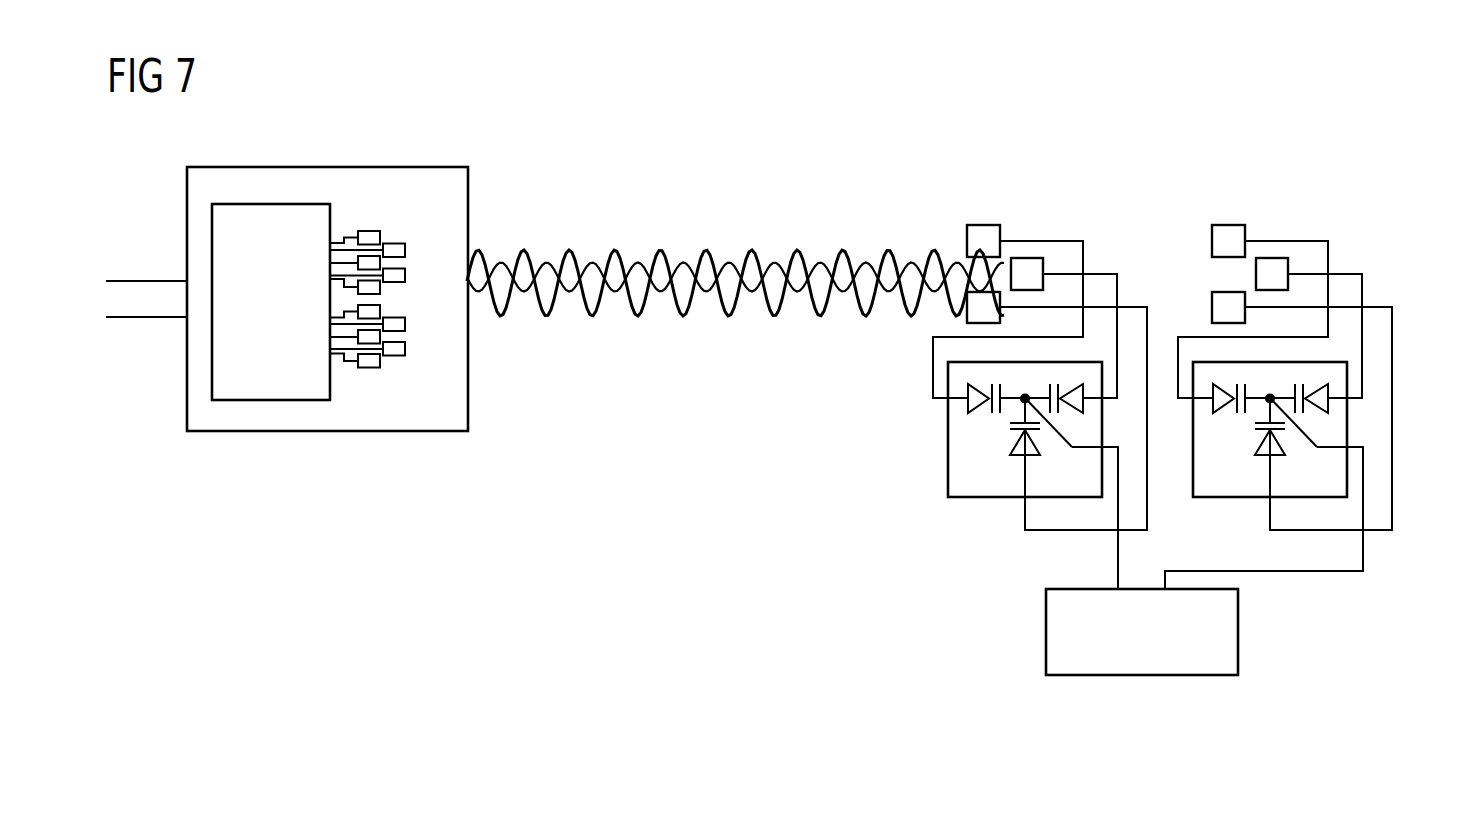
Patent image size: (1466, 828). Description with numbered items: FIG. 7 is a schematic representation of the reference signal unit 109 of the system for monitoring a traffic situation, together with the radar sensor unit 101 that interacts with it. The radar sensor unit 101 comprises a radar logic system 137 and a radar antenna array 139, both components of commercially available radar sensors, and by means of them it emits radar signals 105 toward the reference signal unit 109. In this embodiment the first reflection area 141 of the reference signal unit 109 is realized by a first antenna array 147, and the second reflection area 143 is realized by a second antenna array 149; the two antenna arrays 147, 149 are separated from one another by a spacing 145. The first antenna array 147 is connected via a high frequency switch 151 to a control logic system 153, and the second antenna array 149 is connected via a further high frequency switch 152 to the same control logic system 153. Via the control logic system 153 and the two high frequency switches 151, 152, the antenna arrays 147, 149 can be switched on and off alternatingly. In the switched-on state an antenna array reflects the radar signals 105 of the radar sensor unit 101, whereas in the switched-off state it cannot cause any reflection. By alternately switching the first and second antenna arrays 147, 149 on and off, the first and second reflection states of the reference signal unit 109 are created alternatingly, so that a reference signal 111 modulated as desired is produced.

The radar sensor unit 101 is at (337, 167).
The radar logic system 137 is at (332, 218).
The radar antenna array 139 is at (392, 389).
The radar signals 105 is at (617, 250).
The reference signal 111 is at (722, 263).
The first antenna array 147 is at (975, 196).
The spacing 145 is at (1287, 195).
The second antenna array 149 is at (1313, 211).
The reference signal unit 109 is at (1390, 274).
The first reflection area 141 is at (986, 548).
The second reflection area 143 is at (1338, 606).
The high frequency switch 151 is at (948, 447).
The further high frequency switch 152 is at (1228, 498).
The control logic system 153 is at (1238, 632).